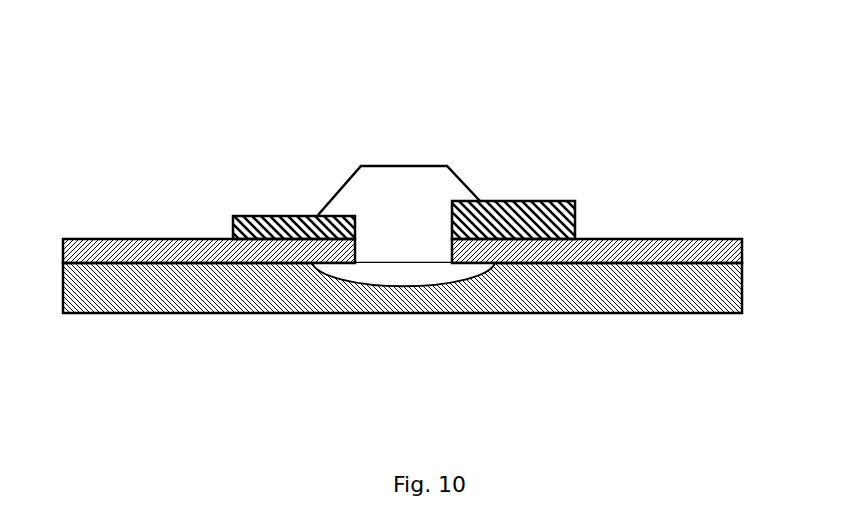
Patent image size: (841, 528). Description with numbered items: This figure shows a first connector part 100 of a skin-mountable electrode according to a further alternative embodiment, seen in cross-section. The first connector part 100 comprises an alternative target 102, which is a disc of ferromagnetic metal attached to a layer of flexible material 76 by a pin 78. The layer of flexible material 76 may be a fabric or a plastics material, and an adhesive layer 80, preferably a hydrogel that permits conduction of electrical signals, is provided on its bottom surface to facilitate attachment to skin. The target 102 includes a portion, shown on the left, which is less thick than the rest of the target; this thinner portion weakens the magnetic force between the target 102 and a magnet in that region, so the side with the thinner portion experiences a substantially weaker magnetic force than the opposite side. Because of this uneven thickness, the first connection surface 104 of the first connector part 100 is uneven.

The first connector part 100 is at (314, 88).
The target 102 is at (575, 201).
The first connection surface 104 is at (295, 215).
The layer of flexible material 76 is at (277, 256).
The pin 78 is at (420, 253).
The adhesive layer 80 is at (200, 292).